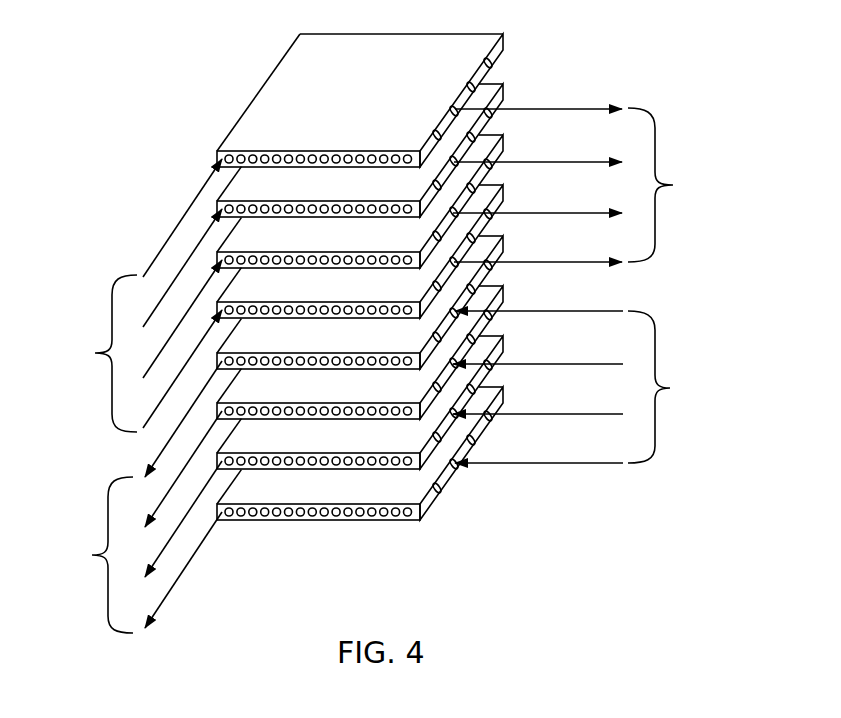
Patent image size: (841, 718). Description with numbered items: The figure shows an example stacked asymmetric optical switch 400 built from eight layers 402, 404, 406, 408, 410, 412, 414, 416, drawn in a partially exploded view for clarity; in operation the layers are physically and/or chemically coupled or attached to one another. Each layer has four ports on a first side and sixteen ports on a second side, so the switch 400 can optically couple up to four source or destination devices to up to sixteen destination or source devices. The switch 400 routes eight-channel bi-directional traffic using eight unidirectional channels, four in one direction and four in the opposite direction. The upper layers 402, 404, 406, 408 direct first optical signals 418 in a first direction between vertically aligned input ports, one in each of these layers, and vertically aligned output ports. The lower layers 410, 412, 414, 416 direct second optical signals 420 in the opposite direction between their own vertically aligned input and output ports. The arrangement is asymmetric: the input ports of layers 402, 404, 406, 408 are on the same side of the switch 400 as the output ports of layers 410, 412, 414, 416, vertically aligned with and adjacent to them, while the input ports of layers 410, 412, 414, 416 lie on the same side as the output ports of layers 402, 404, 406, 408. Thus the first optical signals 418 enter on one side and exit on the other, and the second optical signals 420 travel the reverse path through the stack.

The stacked asymmetric optical switch 400 is at (301, 273).
The layer 402 is at (307, 142).
The layer 404 is at (307, 192).
The layer 406 is at (307, 243).
The layer 408 is at (307, 293).
The layer 410 is at (307, 344).
The layer 412 is at (307, 394).
The layer 414 is at (307, 444).
The layer 416 is at (307, 495).
The first optical signals 418 is at (724, 197).
The second optical signals 420 is at (728, 399).